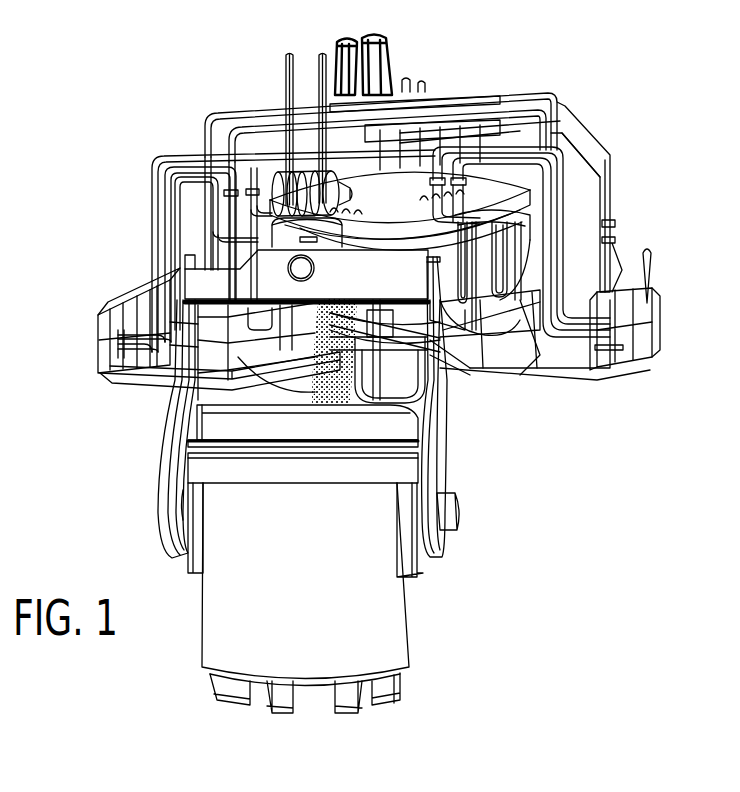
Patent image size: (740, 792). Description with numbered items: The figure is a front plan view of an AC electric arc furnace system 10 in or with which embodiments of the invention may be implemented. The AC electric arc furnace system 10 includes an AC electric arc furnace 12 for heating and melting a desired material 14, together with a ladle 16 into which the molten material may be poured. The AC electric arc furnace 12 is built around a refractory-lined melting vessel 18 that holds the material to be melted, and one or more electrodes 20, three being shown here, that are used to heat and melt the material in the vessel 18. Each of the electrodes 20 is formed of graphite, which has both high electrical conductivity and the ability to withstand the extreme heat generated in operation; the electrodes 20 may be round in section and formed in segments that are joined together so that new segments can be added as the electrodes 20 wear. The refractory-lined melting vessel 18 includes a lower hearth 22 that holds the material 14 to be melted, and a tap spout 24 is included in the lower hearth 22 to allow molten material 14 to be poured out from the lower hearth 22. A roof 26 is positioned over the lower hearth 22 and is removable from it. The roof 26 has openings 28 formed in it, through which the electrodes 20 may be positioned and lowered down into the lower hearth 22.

The AC electric arc furnace system 10 is at (128, 112).
The AC electric arc furnace 12 is at (584, 107).
The desired material 14 is at (418, 426).
The ladle 16 is at (355, 600).
The refractory-lined melting vessel 18 is at (525, 251).
The electrodes 20 is at (375, 62).
The lower hearth 22 is at (477, 327).
The tap spout 24 is at (330, 290).
The roof 26 is at (508, 191).
The openings 28 is at (381, 182).